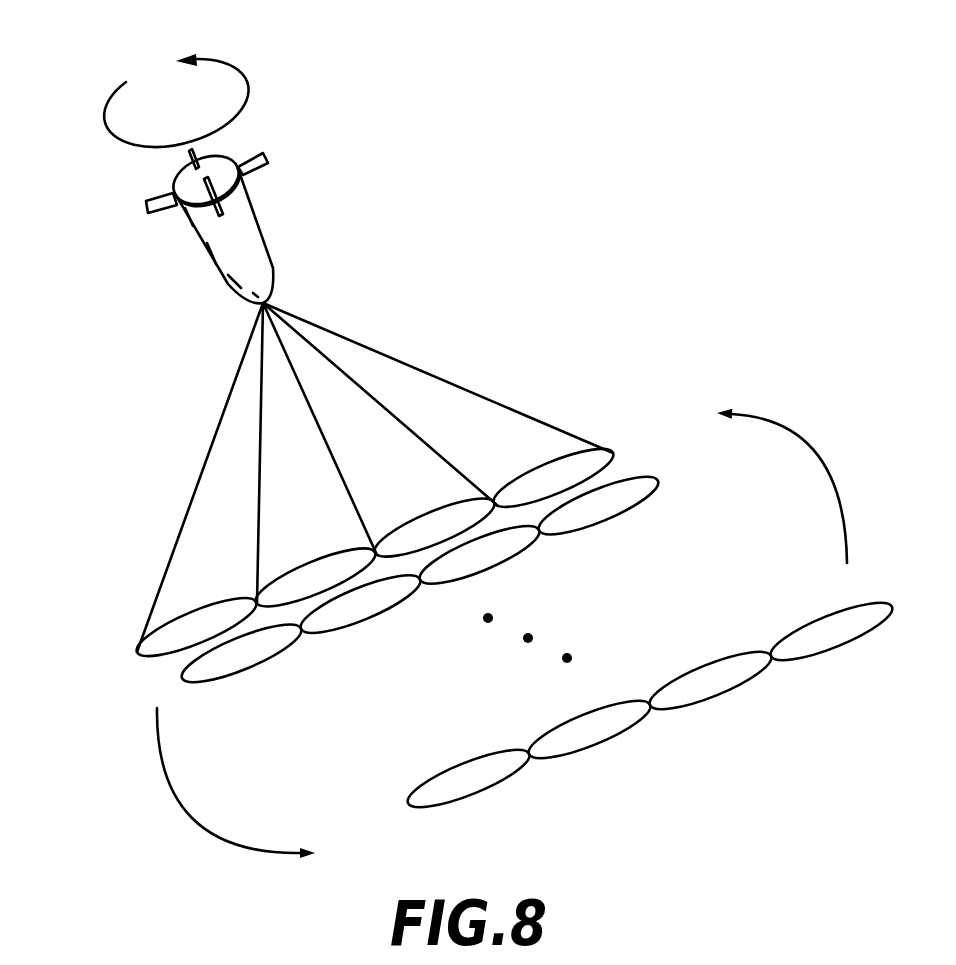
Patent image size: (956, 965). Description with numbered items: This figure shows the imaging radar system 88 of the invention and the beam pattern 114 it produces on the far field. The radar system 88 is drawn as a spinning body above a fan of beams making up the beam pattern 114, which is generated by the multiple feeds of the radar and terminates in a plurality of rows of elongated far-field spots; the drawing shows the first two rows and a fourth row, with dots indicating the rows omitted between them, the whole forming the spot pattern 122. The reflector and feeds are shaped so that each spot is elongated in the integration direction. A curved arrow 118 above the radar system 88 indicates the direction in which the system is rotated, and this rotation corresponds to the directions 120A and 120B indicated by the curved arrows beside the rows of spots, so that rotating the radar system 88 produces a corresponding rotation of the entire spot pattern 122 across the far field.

The direction of rotation 118 is at (228, 57).
The imaging radar system 88 is at (305, 204).
The beam pattern 114 is at (503, 335).
The beam footprint pattern on ground 122 is at (403, 718).
The direction 120A is at (207, 830).
The direction 120B is at (770, 423).